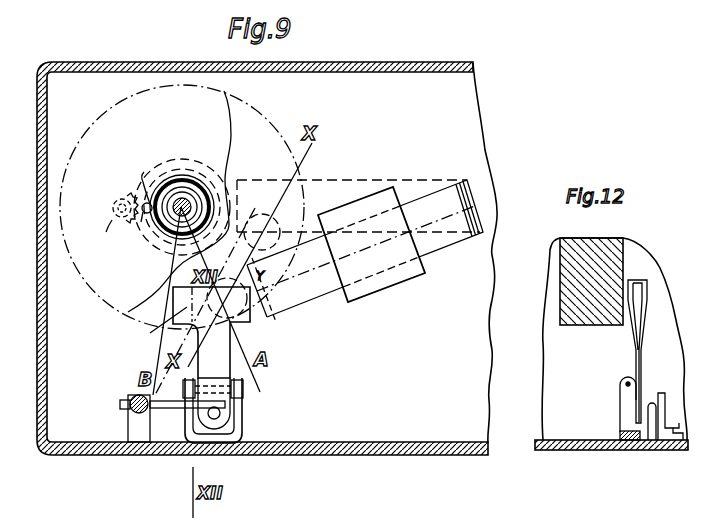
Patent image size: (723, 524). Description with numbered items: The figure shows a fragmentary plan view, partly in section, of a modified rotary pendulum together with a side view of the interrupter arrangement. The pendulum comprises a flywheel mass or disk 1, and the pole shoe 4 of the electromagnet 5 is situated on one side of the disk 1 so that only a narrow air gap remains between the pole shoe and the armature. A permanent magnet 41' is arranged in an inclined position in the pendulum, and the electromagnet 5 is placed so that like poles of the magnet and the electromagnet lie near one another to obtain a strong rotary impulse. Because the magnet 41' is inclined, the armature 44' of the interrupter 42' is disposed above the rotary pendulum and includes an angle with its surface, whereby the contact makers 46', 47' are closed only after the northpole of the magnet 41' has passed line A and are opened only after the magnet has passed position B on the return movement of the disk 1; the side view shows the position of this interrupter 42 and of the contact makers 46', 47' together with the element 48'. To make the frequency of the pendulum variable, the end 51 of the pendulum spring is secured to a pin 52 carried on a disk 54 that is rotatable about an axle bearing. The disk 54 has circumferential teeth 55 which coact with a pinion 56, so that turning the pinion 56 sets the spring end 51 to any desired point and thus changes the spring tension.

In FIG. 9, the disk 1 is at (252, 138).
In FIG. 12, the disk 1 is at (582, 303).
In FIG. 9, the pole shoe 4 is at (298, 280).
In FIG. 9, the electromagnet 5 is at (387, 277).
In FIG. 9, the permanent magnet 41' is at (258, 281).
In FIG. 12, the interrupter 42 is at (614, 351).
In FIG. 9, the interrupter 42' is at (236, 338).
In FIG. 9, the armature 44' is at (151, 334).
In FIG. 9, the contact maker 46' is at (239, 410).
In FIG. 12, the contact maker 46' is at (637, 448).
In FIG. 12, the contact maker 47' is at (670, 443).
In FIG. 9, the rod 48' is at (172, 446).
In FIG. 12, the rod 48' is at (649, 399).
In FIG. 9, the end of spring 51 is at (170, 244).
In FIG. 9, the pin 52 is at (144, 204).
In FIG. 9, the disk 54 is at (188, 172).
In FIG. 9, the circumferential teeth 55 is at (160, 165).
In FIG. 9, the pinion 56 is at (117, 222).